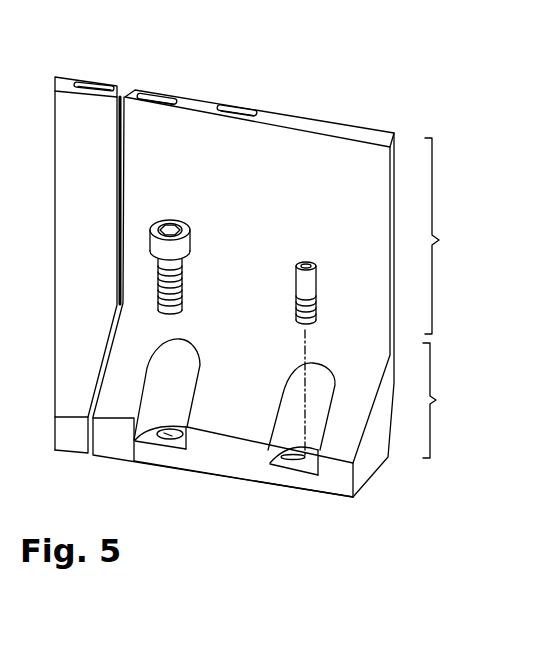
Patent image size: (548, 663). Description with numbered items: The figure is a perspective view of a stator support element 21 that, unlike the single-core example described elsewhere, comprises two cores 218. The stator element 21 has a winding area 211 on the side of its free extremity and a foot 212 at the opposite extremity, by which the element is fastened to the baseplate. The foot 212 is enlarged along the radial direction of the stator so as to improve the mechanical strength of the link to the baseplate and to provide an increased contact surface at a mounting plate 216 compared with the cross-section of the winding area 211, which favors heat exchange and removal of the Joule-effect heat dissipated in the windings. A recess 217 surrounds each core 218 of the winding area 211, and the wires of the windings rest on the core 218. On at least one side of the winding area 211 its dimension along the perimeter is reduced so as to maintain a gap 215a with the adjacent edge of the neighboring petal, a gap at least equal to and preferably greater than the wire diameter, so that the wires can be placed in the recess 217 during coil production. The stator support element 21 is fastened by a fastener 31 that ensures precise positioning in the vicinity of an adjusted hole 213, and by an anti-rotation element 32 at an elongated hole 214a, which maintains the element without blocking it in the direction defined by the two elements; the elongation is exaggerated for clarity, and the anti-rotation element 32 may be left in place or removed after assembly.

The stator element 21 is at (406, 109).
The winding area 211 is at (457, 236).
The foot 212 is at (450, 400).
The adjusted hole 213 is at (136, 441).
The elongated hole 214a is at (272, 468).
The gap 215a is at (131, 88).
The mounting plate 216 is at (342, 497).
The recess 217 is at (130, 95).
The core 218 is at (200, 107).
The fastener 31 is at (160, 253).
The anti-rotation element 32 is at (317, 278).